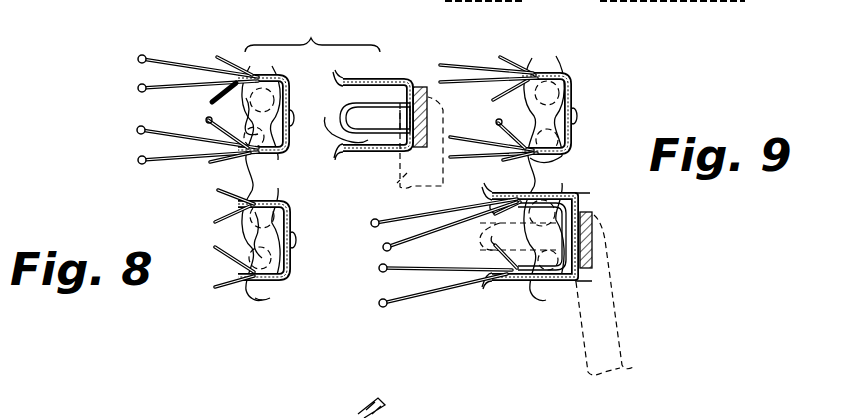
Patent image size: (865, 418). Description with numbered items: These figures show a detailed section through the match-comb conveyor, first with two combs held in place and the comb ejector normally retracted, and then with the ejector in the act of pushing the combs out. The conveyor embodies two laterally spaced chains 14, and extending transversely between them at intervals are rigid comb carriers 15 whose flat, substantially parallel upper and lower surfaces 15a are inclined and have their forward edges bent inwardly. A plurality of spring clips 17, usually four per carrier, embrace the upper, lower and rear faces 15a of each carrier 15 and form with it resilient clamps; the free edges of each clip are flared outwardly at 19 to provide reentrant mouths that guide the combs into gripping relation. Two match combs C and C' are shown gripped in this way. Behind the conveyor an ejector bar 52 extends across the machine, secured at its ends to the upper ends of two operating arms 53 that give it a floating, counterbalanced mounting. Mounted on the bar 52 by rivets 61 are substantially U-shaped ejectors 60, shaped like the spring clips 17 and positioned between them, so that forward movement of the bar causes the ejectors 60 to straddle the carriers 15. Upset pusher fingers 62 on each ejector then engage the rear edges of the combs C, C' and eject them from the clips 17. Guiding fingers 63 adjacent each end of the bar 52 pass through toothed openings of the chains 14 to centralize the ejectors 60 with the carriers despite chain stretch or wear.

In FIG. 8, the chains 14 is at (262, 296).
In FIG. 9, the chains 14 is at (557, 173).
In FIG. 8, the comb carriers 15 is at (206, 119).
In FIG. 9, the comb carriers 15 is at (499, 128).
In FIG. 8, the surfaces of the carriers 15a is at (252, 96).
In FIG. 9, the surfaces of the carriers 15a is at (444, 253).
In FIG. 8, the spring clips 17 is at (288, 86).
In FIG. 9, the spring clips 17 is at (545, 72).
In FIG. 8, the flared free edges 19 is at (236, 64).
In FIG. 8, the match comb C is at (175, 150).
In FIG. 8, the match comb C' is at (177, 73).
In FIG. 8, the ejector bar 52 is at (422, 86).
In FIG. 9, the ejector bar 52 is at (588, 208).
In FIG. 8, the operating arms 53 is at (394, 182).
In FIG. 9, the operating arms 53 is at (630, 341).
In FIG. 8, the ejectors 60 is at (395, 80).
In FIG. 9, the ejectors 60 is at (592, 279).
In FIG. 8, the rivets 61 is at (410, 117).
In FIG. 8, the pusher fingers 62 is at (368, 87).
In FIG. 9, the pusher fingers 62 is at (526, 200).
In FIG. 8, the guiding fingers 63 is at (375, 118).